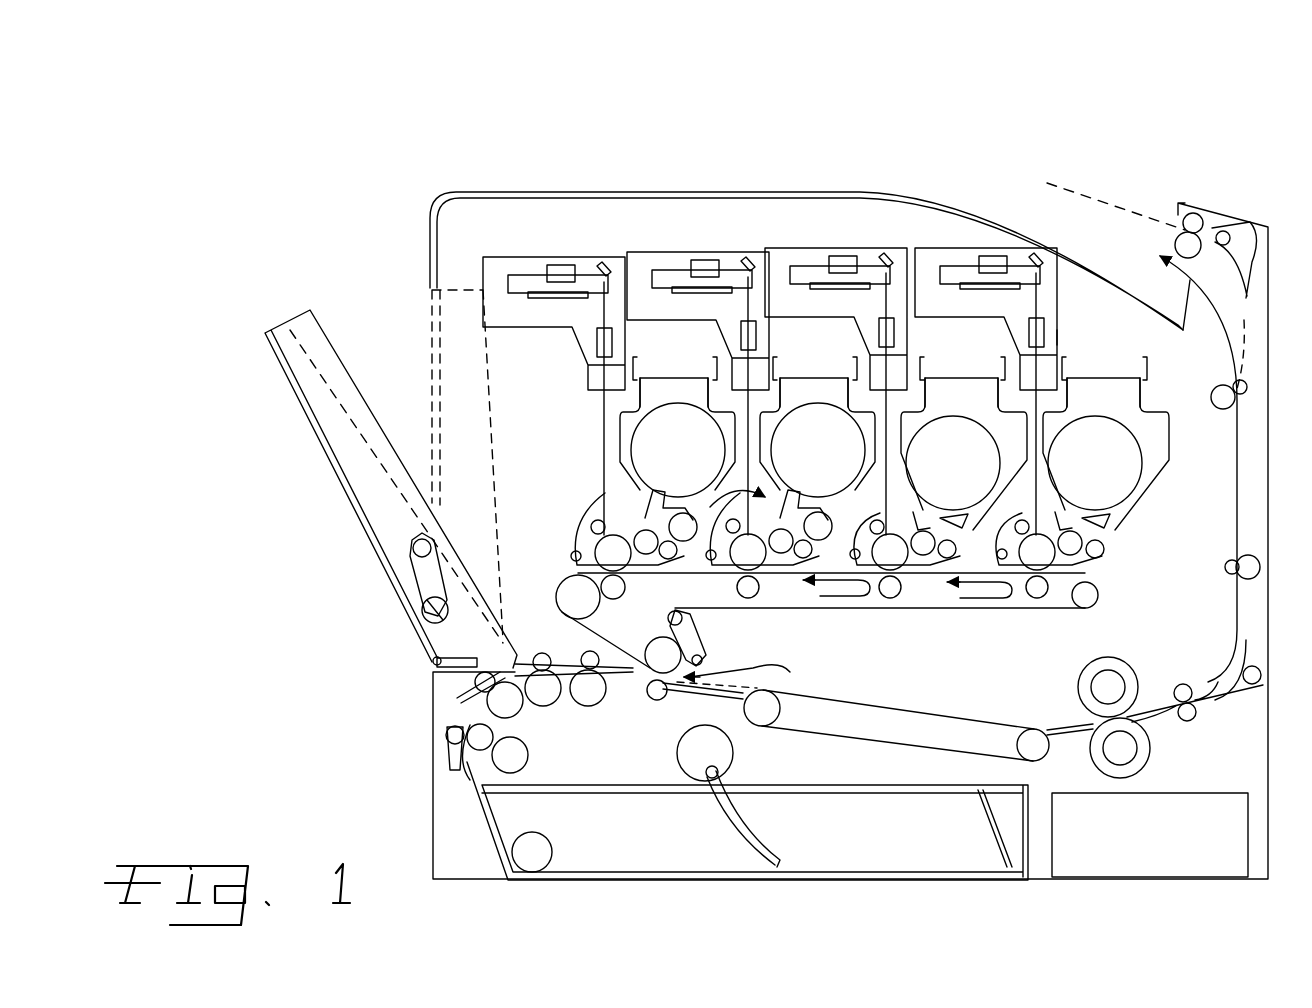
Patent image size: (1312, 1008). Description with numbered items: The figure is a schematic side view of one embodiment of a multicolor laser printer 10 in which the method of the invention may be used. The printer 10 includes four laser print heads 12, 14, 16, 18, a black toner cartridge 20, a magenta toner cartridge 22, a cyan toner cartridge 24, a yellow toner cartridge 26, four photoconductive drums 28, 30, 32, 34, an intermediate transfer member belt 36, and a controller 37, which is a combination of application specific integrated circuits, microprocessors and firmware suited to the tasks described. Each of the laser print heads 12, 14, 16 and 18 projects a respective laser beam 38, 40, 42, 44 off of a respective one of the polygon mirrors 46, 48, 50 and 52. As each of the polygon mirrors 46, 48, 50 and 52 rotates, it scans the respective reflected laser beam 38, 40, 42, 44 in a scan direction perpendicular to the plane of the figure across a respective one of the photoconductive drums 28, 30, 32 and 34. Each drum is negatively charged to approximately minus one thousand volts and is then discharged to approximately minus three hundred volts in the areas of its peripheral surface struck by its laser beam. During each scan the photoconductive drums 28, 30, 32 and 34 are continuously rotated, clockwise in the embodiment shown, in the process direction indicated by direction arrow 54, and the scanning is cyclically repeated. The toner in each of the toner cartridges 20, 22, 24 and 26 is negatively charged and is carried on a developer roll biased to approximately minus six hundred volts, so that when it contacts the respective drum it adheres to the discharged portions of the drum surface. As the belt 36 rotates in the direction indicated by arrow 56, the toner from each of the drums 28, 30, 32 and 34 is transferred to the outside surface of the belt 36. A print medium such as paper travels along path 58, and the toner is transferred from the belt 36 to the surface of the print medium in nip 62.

The multicolor laser printer 10 is at (1130, 143).
The laser print head 12 is at (537, 339).
The laser print head 14 is at (697, 334).
The laser print head 16 is at (838, 337).
The laser print head 18 is at (1013, 337).
The black toner cartridge 20 is at (677, 427).
The magenta toner cartridge 22 is at (817, 427).
The cyan toner cartridge 24 is at (964, 443).
The yellow toner cartridge 26 is at (1106, 443).
The photoconductive drum 28 is at (605, 552).
The photoconductive drum 30 is at (745, 590).
The photoconductive drum 32 is at (888, 565).
The photoconductive drum 34 is at (1040, 565).
The intermediate transfer member belt 36 is at (940, 610).
The controller 37 is at (1185, 803).
The laser beam 38 is at (610, 430).
The laser beam 40 is at (676, 272).
The laser beam 42 is at (822, 270).
The laser beam 44 is at (1040, 306).
The polygon mirror 46 is at (583, 293).
The polygon mirror 48 is at (722, 286).
The polygon mirror 50 is at (864, 286).
The polygon mirror 52 is at (1014, 284).
The direction arrow 54 is at (730, 490).
The arrow 56 is at (1013, 612).
The path 58 is at (631, 681).
The nip 62 is at (738, 670).